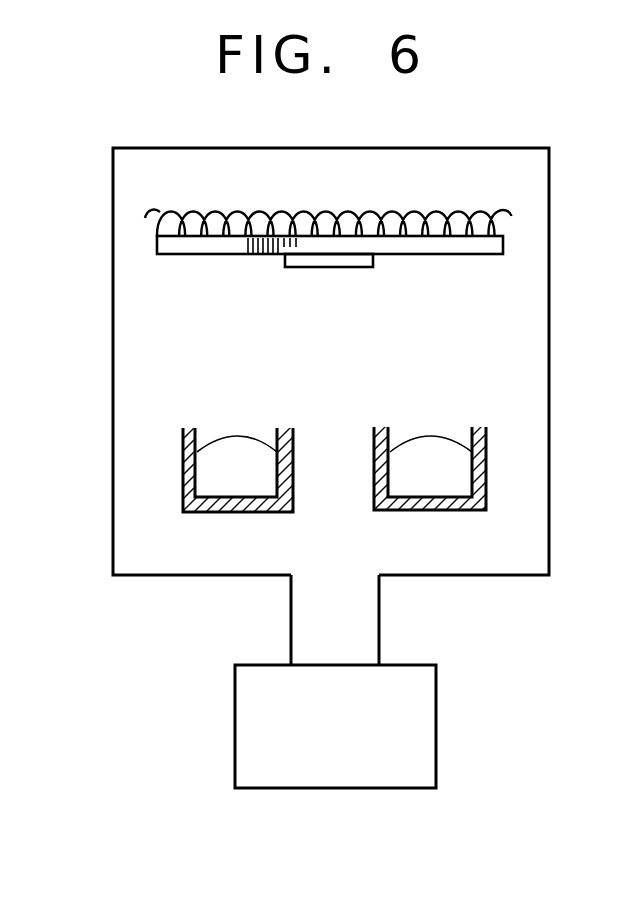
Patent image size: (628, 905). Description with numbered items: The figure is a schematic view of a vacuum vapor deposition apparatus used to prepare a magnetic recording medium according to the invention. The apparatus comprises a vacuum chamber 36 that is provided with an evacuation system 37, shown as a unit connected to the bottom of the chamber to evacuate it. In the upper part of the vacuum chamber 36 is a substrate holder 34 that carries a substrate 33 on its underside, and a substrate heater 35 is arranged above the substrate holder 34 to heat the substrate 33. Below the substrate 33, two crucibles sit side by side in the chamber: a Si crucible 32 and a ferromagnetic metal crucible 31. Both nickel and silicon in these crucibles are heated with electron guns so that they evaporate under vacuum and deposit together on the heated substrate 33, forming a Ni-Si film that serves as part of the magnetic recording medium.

The ferromagnetic metal crucible 31 is at (440, 510).
The Si crucible 32 is at (223, 512).
The substrate 33 is at (315, 268).
The substrate holder 34 is at (486, 255).
The substrate heater 35 is at (463, 212).
The vacuum chamber 36 is at (549, 410).
The evacuation system 37 is at (437, 722).